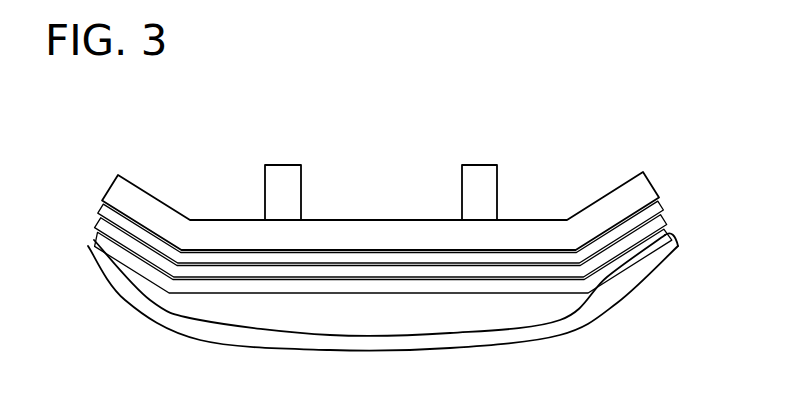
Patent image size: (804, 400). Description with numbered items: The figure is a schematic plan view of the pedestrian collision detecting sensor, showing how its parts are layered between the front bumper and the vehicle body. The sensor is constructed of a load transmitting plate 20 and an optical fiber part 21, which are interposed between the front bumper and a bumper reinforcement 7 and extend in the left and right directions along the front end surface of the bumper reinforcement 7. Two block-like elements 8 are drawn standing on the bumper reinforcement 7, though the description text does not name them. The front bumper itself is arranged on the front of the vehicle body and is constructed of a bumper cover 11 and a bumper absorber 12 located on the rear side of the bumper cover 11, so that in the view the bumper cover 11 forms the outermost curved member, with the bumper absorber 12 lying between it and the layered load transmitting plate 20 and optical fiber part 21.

The bumper reinforcement 7 is at (533, 232).
The protrusions 8 is at (470, 177).
The optical fiber part 21 is at (625, 231).
The load transmitting plate 20 is at (632, 242).
The bumper absorber 12 is at (610, 275).
The bumper cover 11 is at (618, 305).